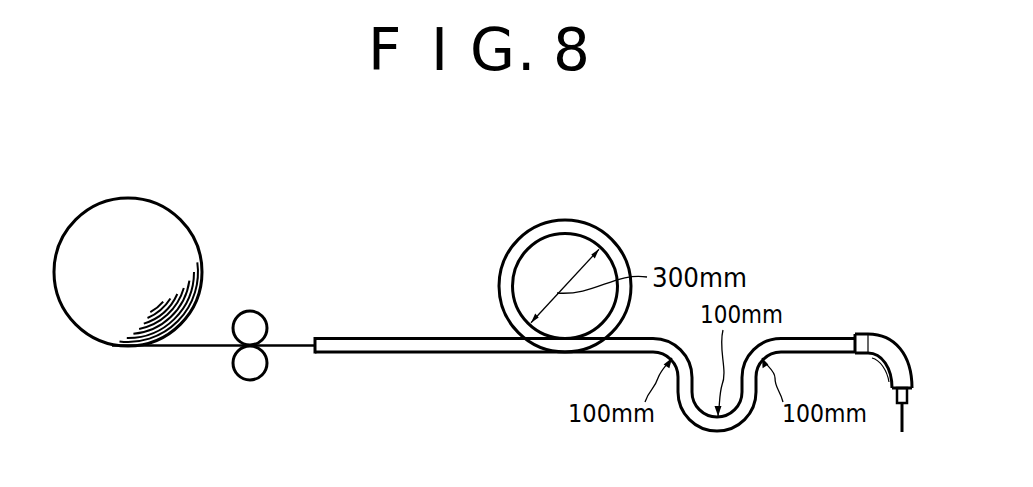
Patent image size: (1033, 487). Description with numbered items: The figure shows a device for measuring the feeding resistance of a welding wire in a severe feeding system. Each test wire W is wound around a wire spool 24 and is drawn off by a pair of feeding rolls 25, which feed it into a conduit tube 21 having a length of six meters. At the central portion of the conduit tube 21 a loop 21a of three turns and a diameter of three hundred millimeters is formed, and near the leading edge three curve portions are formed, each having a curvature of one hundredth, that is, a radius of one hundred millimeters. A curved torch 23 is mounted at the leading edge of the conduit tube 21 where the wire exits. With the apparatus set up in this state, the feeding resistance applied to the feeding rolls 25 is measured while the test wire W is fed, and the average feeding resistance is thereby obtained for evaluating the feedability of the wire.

The wire spool 24 is at (168, 223).
The test wire W is at (184, 348).
The feeding rolls 25 is at (260, 313).
The conduit tube 21 is at (412, 337).
The loop 21a is at (523, 237).
The curved torch 23 is at (889, 343).